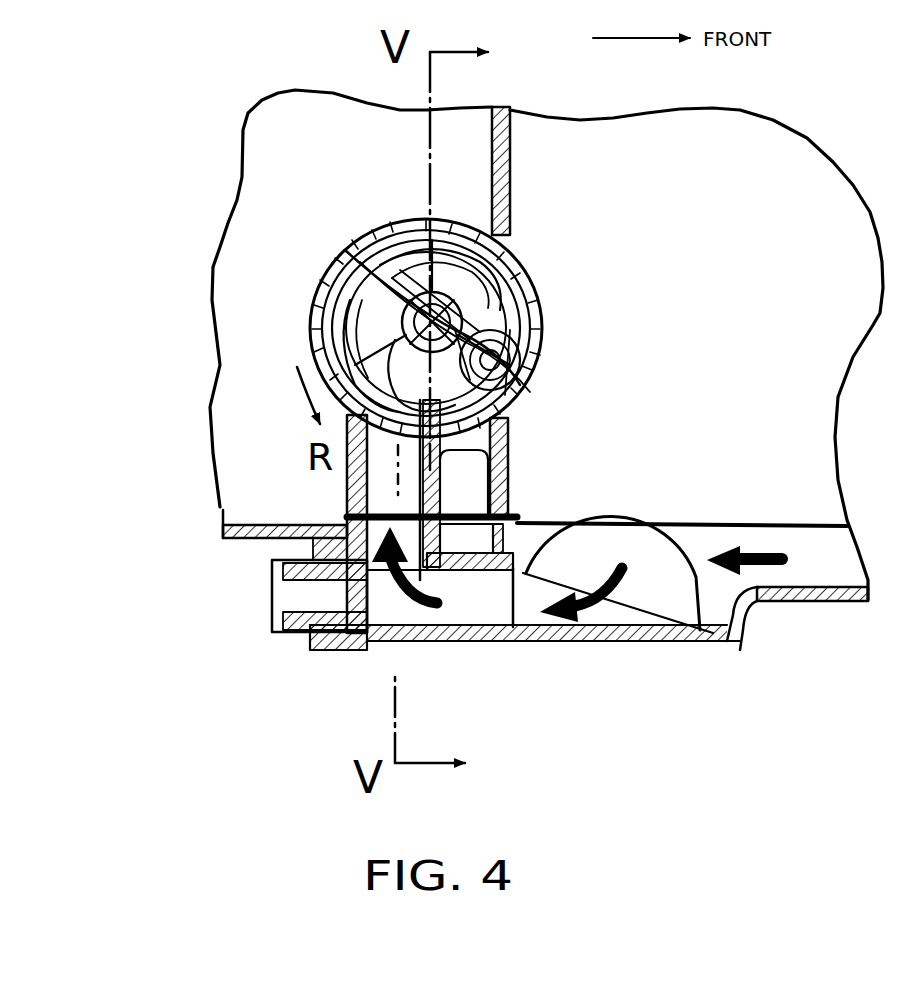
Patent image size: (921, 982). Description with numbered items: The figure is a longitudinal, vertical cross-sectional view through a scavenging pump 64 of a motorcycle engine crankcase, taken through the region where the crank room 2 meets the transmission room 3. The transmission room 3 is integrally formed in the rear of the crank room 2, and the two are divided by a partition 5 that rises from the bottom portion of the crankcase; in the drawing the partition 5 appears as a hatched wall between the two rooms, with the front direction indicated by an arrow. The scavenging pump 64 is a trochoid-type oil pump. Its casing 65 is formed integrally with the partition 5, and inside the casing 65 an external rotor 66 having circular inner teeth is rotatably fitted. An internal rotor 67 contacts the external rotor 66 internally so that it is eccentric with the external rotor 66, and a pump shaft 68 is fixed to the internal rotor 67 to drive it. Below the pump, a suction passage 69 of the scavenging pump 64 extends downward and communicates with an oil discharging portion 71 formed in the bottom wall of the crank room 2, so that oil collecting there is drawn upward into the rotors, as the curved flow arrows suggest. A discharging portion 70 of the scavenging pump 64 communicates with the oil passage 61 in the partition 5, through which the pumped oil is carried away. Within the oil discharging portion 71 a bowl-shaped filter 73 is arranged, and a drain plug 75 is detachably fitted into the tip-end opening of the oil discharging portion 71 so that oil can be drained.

The crank room 2 is at (760, 328).
The transmission room 3 is at (307, 241).
The partition 5 is at (512, 165).
The oil passage 61 is at (548, 340).
The scavenging pump 64 is at (313, 327).
The casing 65 is at (383, 223).
The external rotor 66 is at (310, 350).
The internal rotor 67 is at (515, 248).
The pump shaft 68 is at (545, 313).
The suction passage 69 is at (348, 500).
The discharging portion 70 is at (505, 423).
The oil discharging portion 71 is at (613, 620).
The filter 73 is at (727, 632).
The drain plug 75 is at (270, 613).